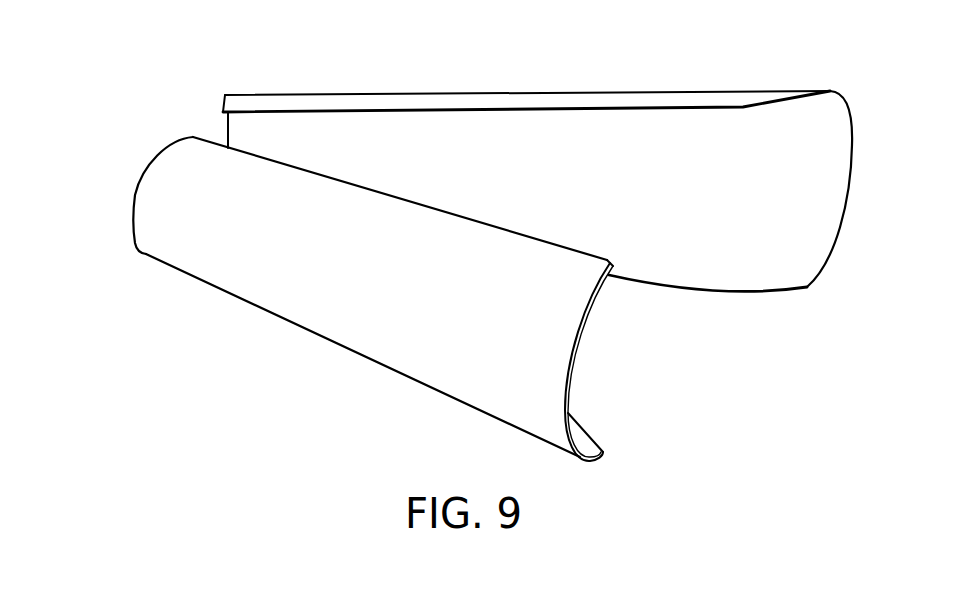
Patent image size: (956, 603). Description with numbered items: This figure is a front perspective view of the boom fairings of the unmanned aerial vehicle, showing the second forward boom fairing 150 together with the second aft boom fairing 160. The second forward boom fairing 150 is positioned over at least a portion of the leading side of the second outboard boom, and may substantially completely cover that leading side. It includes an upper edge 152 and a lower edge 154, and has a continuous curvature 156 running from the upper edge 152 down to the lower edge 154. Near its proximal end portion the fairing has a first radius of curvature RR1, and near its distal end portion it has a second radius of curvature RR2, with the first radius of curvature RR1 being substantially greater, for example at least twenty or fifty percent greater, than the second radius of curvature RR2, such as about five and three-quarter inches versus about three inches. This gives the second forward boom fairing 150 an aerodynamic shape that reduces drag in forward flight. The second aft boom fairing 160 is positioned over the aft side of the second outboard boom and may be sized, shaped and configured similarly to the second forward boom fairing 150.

The second forward boom fairing 150 is at (363, 299).
The upper edge 152 is at (502, 228).
The lower edge 154 is at (603, 452).
The continuous curvature 156 is at (422, 338).
The second aft boom fairing 160 is at (527, 92).
The first radius of curvature RR1 is at (570, 373).
The second radius of curvature RR2 is at (137, 193).